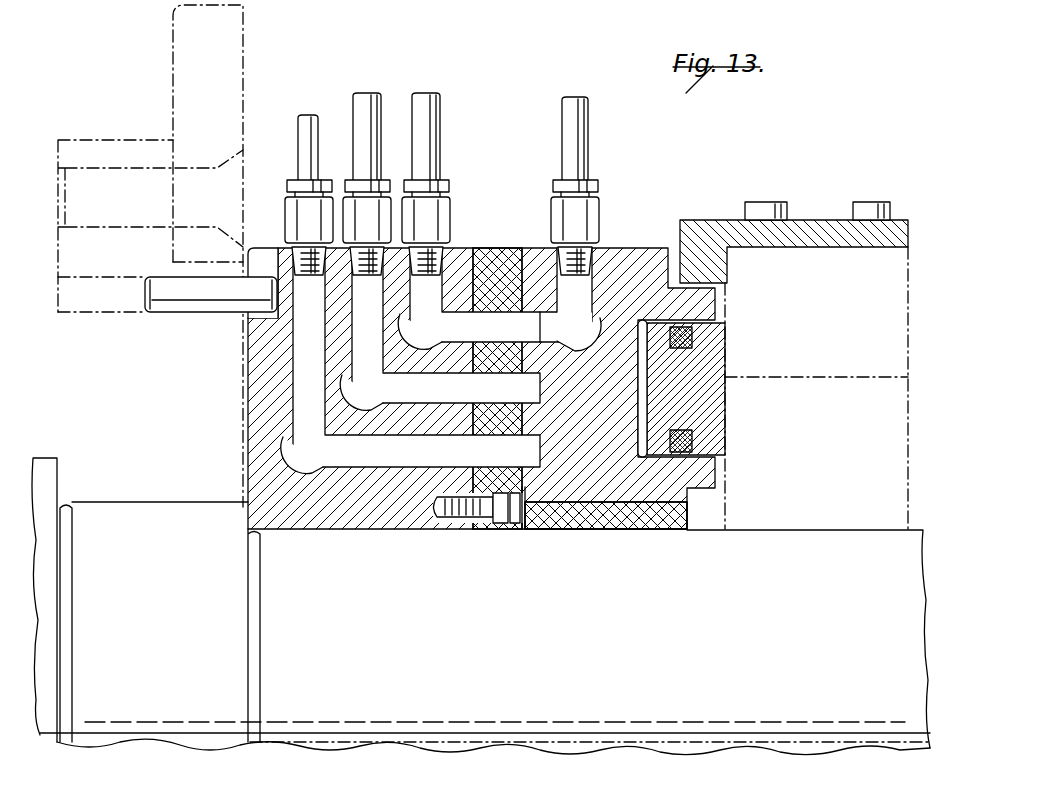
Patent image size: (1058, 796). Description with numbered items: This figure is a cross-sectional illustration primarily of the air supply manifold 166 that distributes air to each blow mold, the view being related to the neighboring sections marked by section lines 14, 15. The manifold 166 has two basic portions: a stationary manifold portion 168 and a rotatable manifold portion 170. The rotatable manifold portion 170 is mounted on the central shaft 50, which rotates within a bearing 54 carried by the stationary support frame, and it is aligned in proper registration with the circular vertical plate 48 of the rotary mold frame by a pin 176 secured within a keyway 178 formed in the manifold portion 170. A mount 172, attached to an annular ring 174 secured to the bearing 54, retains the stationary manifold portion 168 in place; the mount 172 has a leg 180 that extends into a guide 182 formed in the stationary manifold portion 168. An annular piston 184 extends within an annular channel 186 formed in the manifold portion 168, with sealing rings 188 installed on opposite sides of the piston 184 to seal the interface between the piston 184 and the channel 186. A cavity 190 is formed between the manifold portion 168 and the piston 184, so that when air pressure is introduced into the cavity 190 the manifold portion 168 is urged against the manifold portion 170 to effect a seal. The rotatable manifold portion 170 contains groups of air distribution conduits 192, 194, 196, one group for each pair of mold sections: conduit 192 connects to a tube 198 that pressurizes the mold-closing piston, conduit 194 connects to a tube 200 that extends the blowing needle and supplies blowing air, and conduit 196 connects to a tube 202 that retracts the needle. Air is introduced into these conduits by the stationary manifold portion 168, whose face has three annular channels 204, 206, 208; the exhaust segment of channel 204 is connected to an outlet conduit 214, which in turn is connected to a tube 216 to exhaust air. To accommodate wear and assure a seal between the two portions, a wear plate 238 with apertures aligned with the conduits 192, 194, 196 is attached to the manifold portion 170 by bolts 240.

The section line 14- 14 is at (522, 247).
The section line 15- 15 is at (672, 133).
The circular vertical plate 48 is at (193, 52).
The central shaft 50 is at (350, 671).
The bearing 54 is at (897, 456).
The air supply manifold 166 is at (497, 553).
The stationary manifold portion 168 is at (618, 262).
The rotatable manifold portion 170 is at (371, 530).
The mount 172 is at (816, 230).
The annular ring 174 is at (893, 293).
The pin 176 is at (205, 307).
The keyway 178 is at (263, 246).
The leg 180 is at (690, 250).
The guide 182 is at (673, 245).
The annular piston 184 is at (708, 372).
The annular channel 186 is at (722, 447).
The sealing rings 188 is at (692, 338).
The cavity 190 is at (643, 422).
The air distribution conduit 192 is at (468, 341).
The air distribution conduit 194 is at (440, 401).
The air distribution conduit 196 is at (425, 463).
The tube 198 is at (442, 113).
The tube 200 is at (372, 93).
The tube 202 is at (303, 128).
The annular channel 204 is at (530, 332).
The annular channel 206 is at (525, 392).
The annular channel 208 is at (525, 453).
The outlet conduit 214 is at (574, 299).
The tube 216 is at (572, 100).
The wear plate 238 is at (487, 250).
The bolts 240 is at (456, 530).